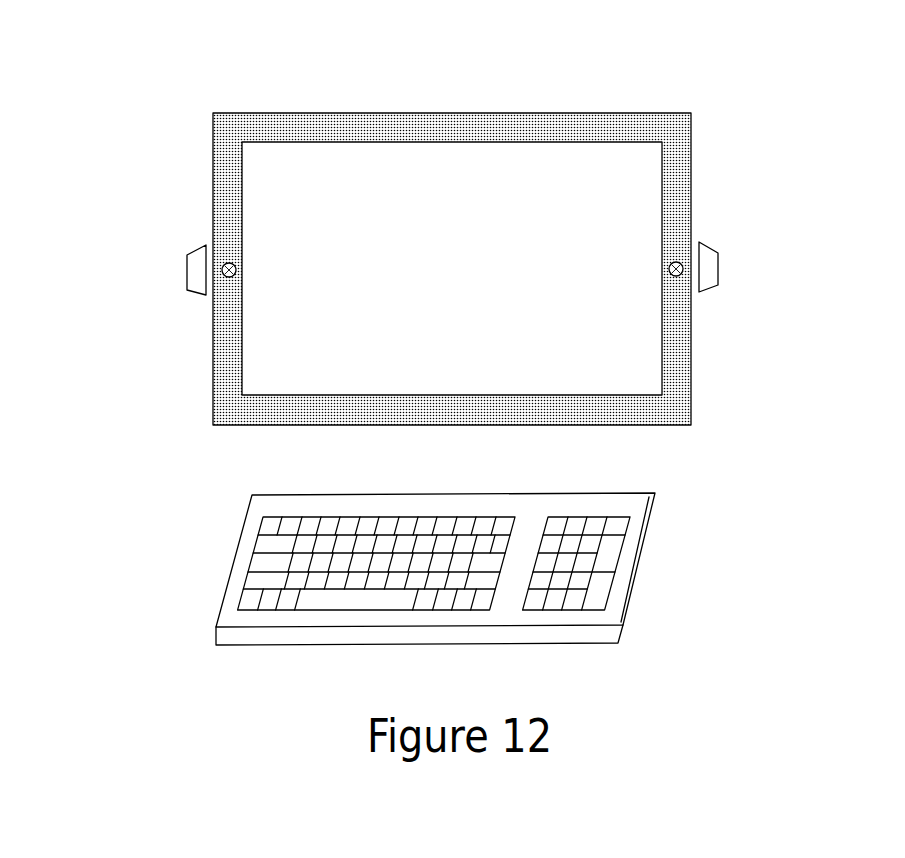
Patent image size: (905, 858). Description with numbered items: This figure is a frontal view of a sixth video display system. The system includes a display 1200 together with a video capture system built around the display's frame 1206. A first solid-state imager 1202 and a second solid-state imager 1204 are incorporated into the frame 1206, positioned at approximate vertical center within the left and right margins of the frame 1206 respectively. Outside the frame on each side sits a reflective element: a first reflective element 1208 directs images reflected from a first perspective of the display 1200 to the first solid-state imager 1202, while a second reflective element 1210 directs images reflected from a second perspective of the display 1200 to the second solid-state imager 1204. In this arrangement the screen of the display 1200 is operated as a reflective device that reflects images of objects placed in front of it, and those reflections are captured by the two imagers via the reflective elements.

The display 1200 is at (624, 65).
The first solid-state imager 1202 is at (224, 276).
The second solid-state imager 1204 is at (681, 275).
The frame 1206 is at (412, 122).
The first reflective element 1208 is at (187, 239).
The second reflective element 1210 is at (718, 237).